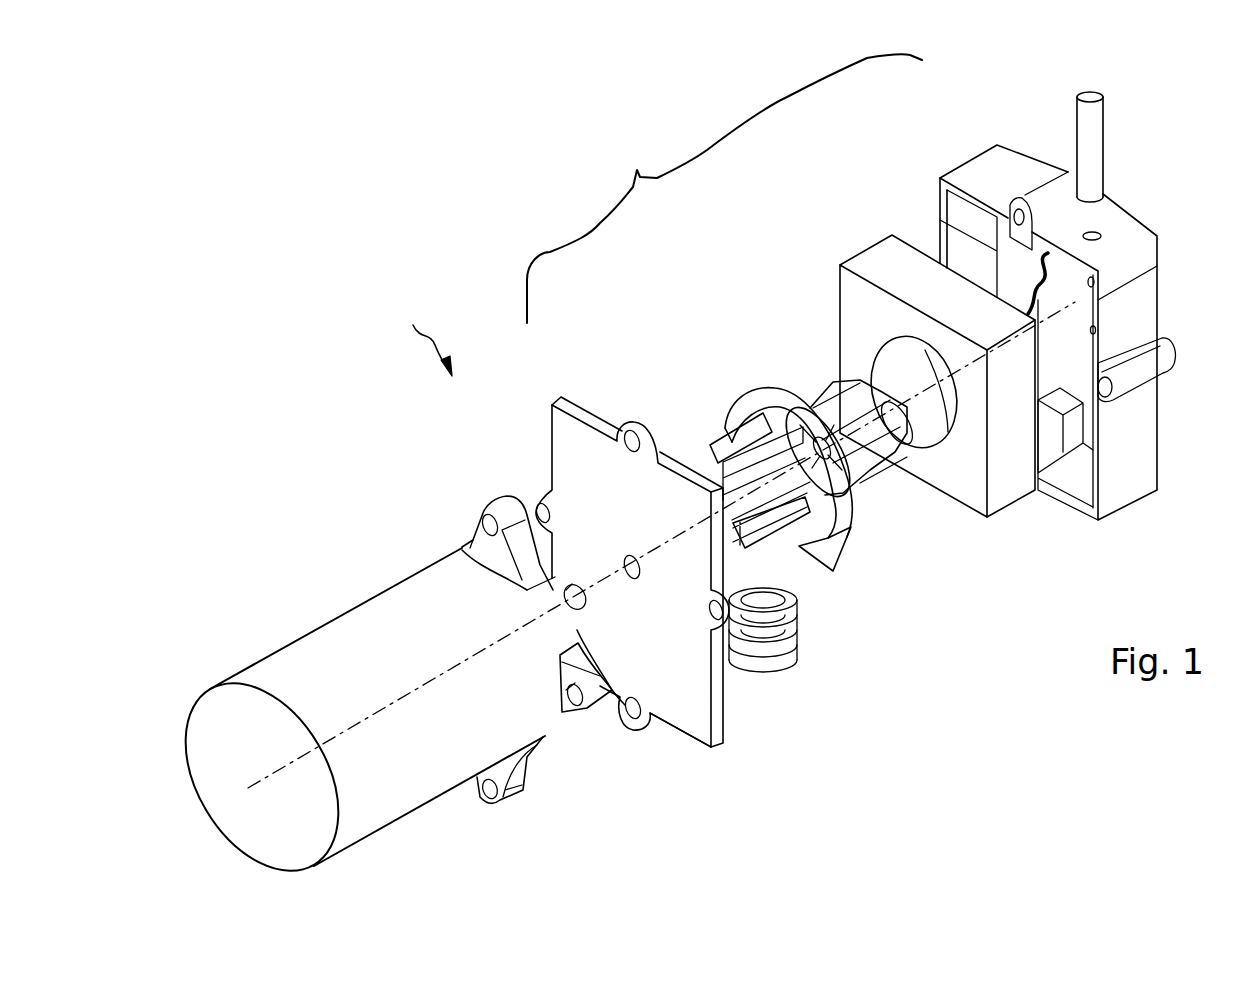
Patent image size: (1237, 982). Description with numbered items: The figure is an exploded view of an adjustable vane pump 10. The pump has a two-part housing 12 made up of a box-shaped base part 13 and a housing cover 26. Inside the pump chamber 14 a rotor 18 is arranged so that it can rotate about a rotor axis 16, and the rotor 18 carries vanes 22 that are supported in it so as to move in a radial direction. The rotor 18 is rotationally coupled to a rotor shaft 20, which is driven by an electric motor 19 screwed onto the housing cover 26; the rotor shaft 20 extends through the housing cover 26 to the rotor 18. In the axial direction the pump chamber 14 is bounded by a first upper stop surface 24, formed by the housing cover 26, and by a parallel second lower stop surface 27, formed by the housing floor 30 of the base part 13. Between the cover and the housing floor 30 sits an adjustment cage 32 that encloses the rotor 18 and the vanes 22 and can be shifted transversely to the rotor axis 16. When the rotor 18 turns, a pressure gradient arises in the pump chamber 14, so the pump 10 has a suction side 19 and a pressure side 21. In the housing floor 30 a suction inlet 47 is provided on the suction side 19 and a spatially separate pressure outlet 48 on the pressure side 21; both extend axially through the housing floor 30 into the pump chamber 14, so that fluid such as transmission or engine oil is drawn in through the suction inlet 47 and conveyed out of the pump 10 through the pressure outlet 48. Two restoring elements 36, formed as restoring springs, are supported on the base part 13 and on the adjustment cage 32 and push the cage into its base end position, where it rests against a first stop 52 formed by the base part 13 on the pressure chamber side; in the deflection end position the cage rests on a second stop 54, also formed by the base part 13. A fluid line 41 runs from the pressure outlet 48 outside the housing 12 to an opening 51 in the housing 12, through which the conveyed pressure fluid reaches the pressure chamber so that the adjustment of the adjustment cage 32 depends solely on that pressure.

The adjustable vane pump 10 is at (426, 337).
The housing 12 is at (724, 188).
The base part 13 is at (1045, 293).
The pump chamber 14 is at (945, 430).
The rotor axis 16 is at (918, 400).
The rotor 18 is at (825, 405).
The electric motor 19 is at (383, 812).
The rotor shaft 20 is at (574, 590).
The pressure side 21 is at (1097, 323).
The vanes 22 is at (725, 447).
The first upper stop surface 24 is at (578, 410).
The housing cover 26 is at (690, 715).
The second lower stop surface 27 is at (1090, 462).
The housing floor 30 is at (1073, 357).
The adjustment cage 32 is at (922, 365).
The restoring elements 36 is at (766, 676).
The fluid line 41 is at (1092, 92).
The suction inlet 47 is at (1005, 214).
The pressure outlet 48 is at (1096, 280).
The opening 51 is at (1096, 233).
The first stop 52 is at (1007, 210).
The second stop 54 is at (1050, 410).